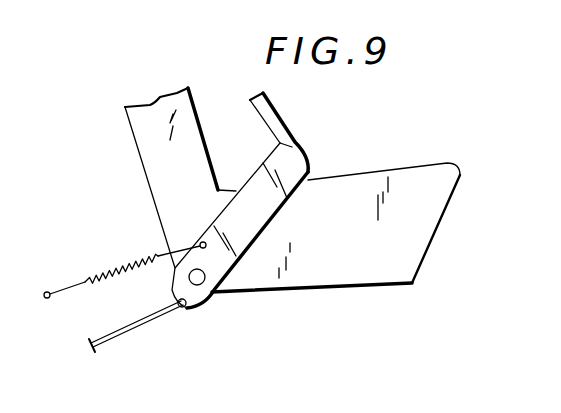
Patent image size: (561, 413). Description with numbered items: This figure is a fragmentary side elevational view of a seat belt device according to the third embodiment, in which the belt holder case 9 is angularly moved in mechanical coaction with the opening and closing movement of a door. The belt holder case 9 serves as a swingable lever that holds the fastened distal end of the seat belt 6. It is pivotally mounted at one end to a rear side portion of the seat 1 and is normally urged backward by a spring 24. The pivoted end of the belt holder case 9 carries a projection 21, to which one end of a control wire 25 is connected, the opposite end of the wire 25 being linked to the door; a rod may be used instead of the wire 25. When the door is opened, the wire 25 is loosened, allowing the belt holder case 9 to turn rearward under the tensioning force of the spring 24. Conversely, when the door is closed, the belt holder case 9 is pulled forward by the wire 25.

The seat 1 is at (340, 187).
The seat belt 6 is at (289, 139).
The belt holder case 9 is at (263, 177).
The projection 21 is at (187, 308).
The spring 24 is at (122, 268).
The control wire 25 is at (128, 335).